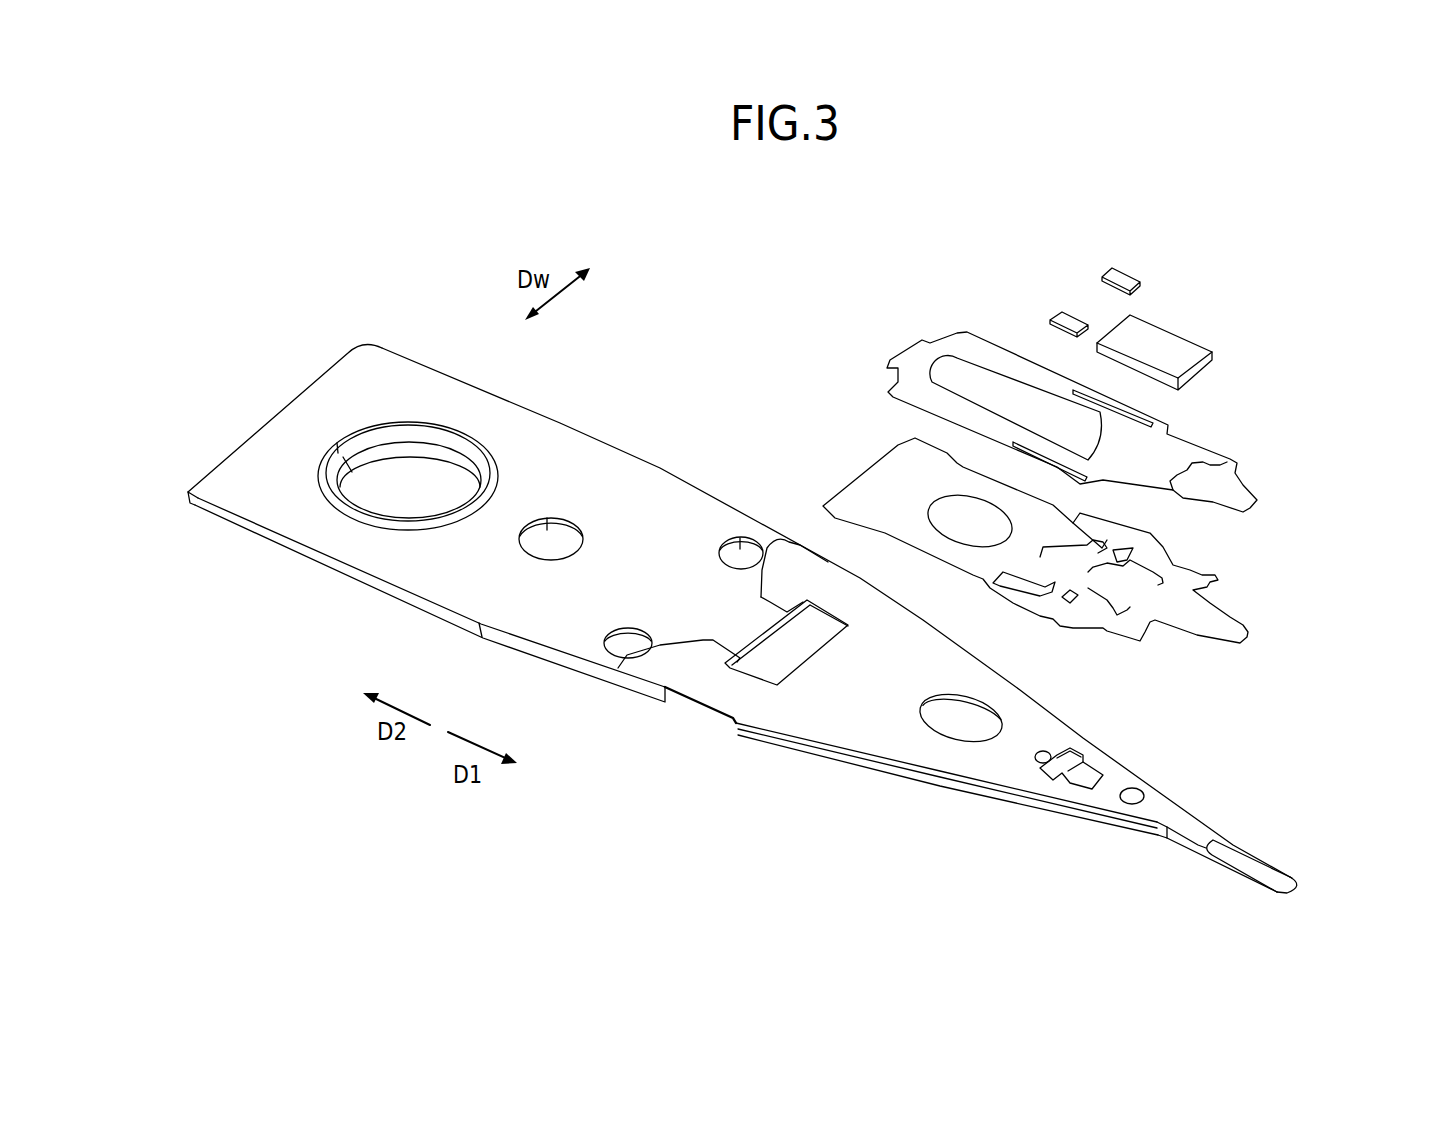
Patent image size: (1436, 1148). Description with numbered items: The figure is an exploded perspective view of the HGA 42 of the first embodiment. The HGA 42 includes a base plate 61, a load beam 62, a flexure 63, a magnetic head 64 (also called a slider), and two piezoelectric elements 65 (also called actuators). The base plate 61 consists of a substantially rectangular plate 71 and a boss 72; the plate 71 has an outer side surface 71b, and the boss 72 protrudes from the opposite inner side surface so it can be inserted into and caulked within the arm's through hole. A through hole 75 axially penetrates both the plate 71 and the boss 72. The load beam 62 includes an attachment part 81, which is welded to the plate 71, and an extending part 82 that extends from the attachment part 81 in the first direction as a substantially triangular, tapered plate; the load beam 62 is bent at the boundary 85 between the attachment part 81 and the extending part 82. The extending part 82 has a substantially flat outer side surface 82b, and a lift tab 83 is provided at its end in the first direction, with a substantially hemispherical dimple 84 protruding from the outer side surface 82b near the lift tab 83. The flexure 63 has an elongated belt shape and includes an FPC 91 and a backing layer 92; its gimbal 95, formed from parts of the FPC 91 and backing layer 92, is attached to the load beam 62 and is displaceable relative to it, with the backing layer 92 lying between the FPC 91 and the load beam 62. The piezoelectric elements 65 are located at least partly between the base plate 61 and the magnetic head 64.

The HGA 42 is at (350, 232).
The base plate 61 is at (400, 353).
The load beam 62 is at (897, 775).
The plate 71 is at (836, 612).
The outer side surface 71b is at (627, 485).
The boss 72 is at (335, 487).
The through hole 75 is at (433, 477).
The attachment part 81 is at (790, 567).
The extending part 82 is at (1021, 722).
The outer side surface 82b is at (1043, 730).
The lift tab 83 is at (1258, 872).
The dimple 84 is at (1131, 790).
The boundary 85 is at (724, 703).
The flexure 63 is at (1338, 478).
The FPC 91 is at (1247, 498).
The backing layer 92 is at (1222, 625).
The gimbal 95 is at (1210, 460).
The magnetic head 64 is at (1185, 362).
The piezoelectric element 65 is at (1127, 285).